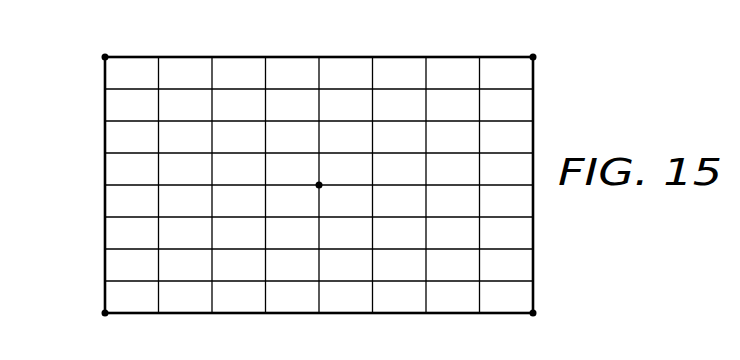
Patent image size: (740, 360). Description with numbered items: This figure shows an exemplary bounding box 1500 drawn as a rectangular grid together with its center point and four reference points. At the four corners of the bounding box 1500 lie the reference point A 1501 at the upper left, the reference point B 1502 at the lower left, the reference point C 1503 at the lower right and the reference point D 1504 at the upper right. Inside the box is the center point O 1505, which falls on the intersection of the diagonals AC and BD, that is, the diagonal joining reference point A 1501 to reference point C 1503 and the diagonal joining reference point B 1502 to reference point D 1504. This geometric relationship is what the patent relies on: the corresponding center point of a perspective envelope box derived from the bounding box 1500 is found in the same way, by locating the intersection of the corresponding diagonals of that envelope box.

The bounding box 1500 is at (105, 170).
The reference point A 1501 is at (103, 55).
The reference point B 1502 is at (103, 315).
The reference point C 1503 is at (535, 316).
The reference point D 1504 is at (535, 55).
The center point O 1505 is at (318, 184).